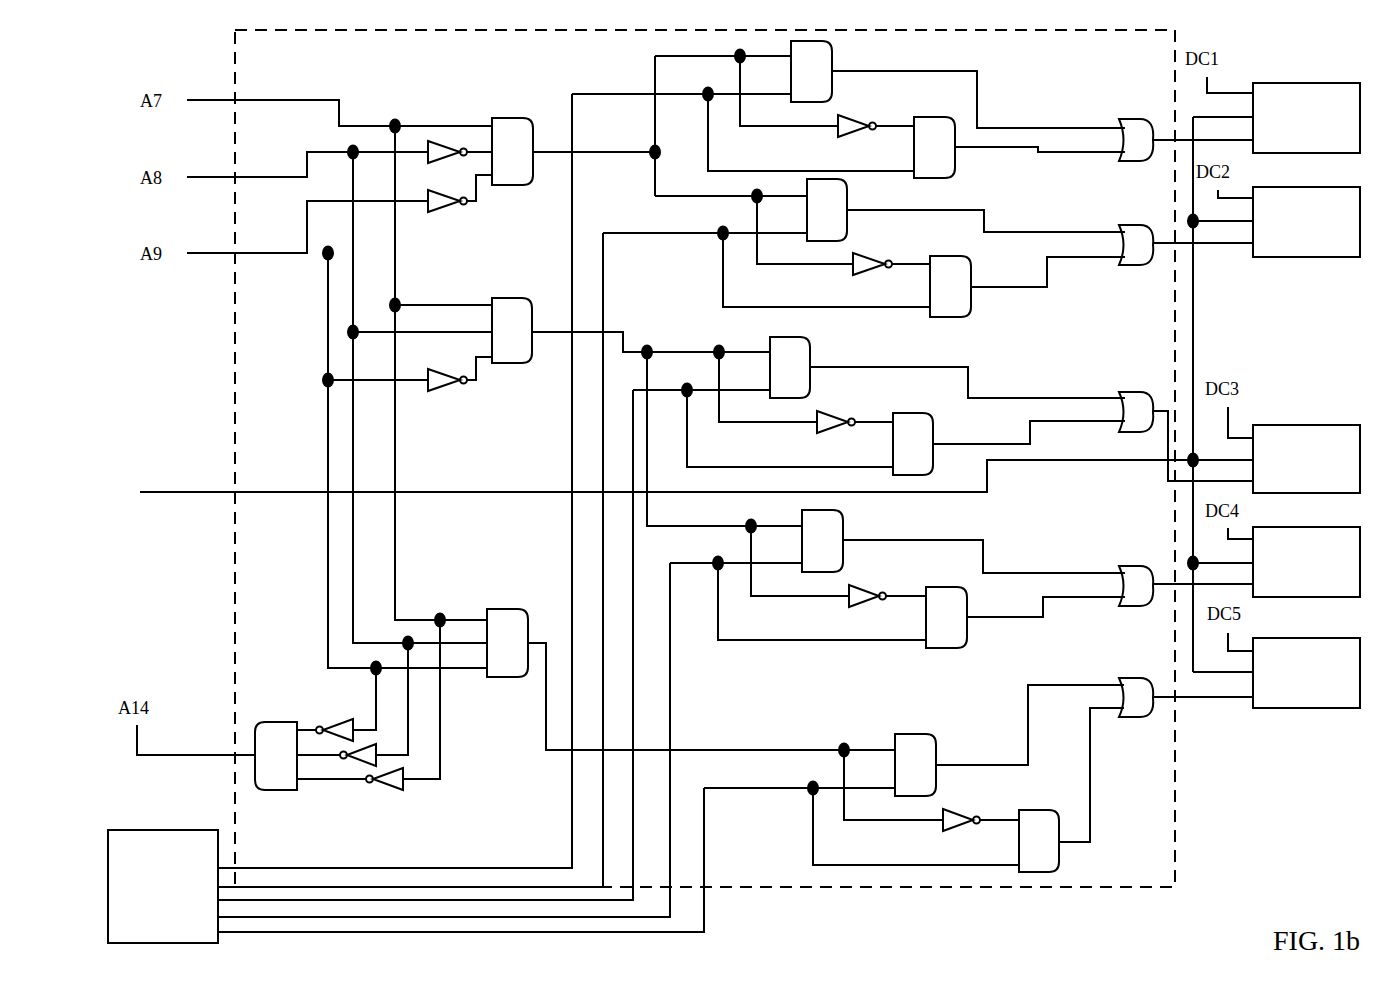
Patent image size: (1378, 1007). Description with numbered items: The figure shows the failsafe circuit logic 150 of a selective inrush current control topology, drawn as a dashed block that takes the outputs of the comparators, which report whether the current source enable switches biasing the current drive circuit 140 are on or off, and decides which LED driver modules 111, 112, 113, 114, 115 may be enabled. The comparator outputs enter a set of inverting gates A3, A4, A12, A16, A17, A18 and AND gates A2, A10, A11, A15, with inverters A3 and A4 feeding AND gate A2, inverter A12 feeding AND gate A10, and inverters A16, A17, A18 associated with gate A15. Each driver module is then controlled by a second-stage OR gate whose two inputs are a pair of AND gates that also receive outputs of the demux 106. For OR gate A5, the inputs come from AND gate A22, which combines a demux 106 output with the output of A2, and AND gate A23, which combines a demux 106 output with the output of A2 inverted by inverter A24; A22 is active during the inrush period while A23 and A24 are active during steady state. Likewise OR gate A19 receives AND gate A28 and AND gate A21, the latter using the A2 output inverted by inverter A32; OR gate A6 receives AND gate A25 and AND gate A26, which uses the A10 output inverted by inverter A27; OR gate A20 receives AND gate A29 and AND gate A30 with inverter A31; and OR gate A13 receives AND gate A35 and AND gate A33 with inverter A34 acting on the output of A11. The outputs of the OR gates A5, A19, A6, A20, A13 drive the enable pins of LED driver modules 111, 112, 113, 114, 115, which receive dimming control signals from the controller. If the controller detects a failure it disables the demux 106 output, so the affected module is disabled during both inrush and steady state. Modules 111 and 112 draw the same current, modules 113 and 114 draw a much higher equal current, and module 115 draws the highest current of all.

The circuit logic 150 is at (223, 55).
The circuit 140 is at (681, 481).
The demux 106 is at (163, 886).
The LED Driver Module1 111 is at (1306, 118).
The LED Driver Module2 112 is at (1306, 222).
The LED Driver Module3 113 is at (1306, 459).
The LED Driver Module4 114 is at (1306, 562).
The LED Driver Module5 115 is at (1306, 673).
The AND gate A2 is at (512, 138).
The inverting gate A3 is at (447, 160).
The inverting gate A4 is at (447, 209).
The OR gate A5 is at (1136, 128).
The OR gate A6 is at (1136, 400).
The AND gate A10 is at (512, 318).
The AND gate A11 is at (507, 629).
The inverting gate A12 is at (447, 388).
The OR gate A13 is at (1136, 686).
The AND gate A15 is at (273, 745).
The inverting gate A16 is at (345, 720).
The inverting gate A17 is at (373, 747).
The inverting gate A18 is at (401, 786).
The OR gate A19 is at (1136, 234).
The OR gate A20 is at (1136, 575).
The AND gate A21 is at (968, 286).
The AND gate A22 is at (833, 71).
The AND gate A23 is at (952, 147).
The inverter A24 is at (857, 117).
The AND gate A25 is at (809, 367).
The AND gate A26 is at (932, 444).
The inverter A27 is at (836, 413).
The AND gate A28 is at (844, 210).
The AND gate A29 is at (841, 541).
The AND gate A30 is at (964, 617).
The inverter A31 is at (868, 587).
The inverter A32 is at (872, 255).
The AND gate A33 is at (1057, 841).
The inverter A34 is at (962, 811).
The AND gate A35 is at (918, 751).